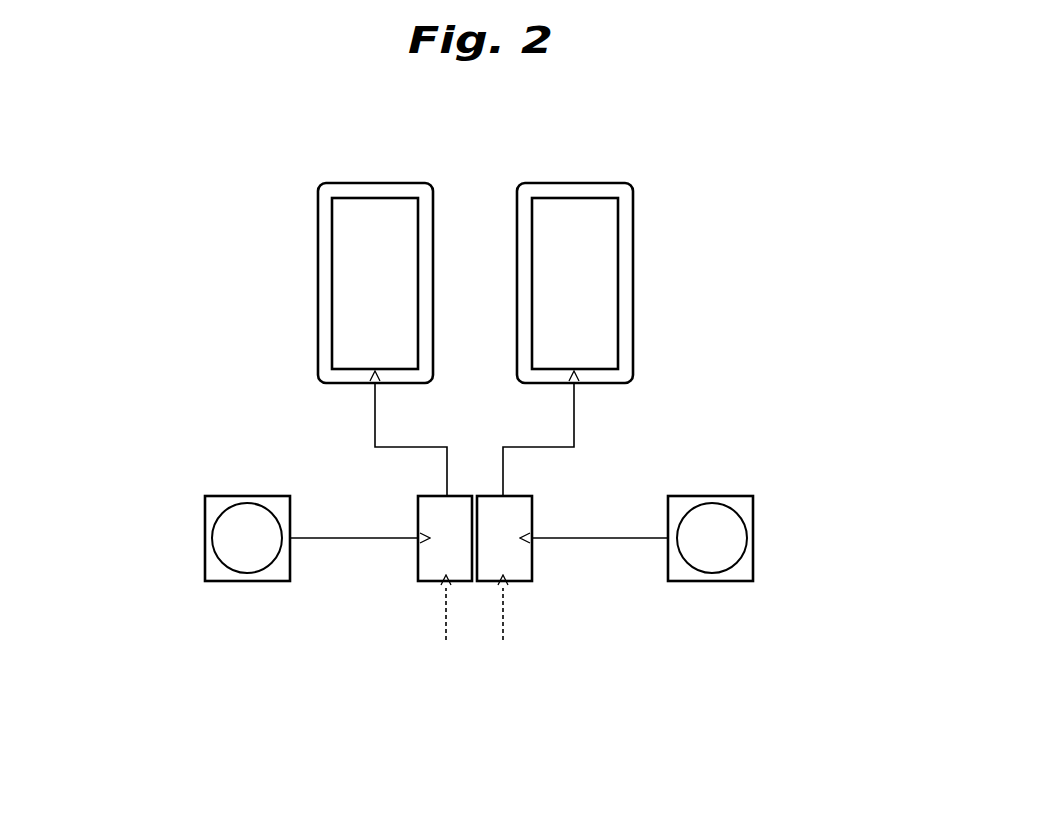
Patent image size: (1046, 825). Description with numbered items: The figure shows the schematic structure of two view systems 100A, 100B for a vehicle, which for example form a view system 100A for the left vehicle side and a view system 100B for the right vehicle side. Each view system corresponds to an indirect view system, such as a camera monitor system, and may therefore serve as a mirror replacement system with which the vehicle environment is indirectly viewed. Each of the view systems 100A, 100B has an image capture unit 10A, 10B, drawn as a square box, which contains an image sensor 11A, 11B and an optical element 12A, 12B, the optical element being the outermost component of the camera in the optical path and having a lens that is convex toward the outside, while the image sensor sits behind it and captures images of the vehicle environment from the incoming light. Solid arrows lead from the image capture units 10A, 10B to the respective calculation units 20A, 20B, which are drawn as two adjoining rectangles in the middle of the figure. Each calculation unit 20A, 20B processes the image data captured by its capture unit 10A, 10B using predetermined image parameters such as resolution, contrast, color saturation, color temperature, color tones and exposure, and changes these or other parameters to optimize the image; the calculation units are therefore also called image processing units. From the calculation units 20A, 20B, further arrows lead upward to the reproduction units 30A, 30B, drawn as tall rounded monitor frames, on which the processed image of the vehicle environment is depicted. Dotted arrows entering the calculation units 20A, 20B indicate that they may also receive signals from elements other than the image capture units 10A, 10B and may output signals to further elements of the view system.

The view system 100A is at (180, 357).
The view system 100B is at (747, 357).
The image capture unit 10A is at (178, 630).
The image capture unit 10B is at (817, 607).
The image sensor 11A is at (203, 562).
The image sensor 11B is at (755, 543).
The optical element 12A is at (236, 552).
The optical element 12B is at (713, 555).
The calculation unit 20A is at (423, 582).
The calculation unit 20B is at (532, 583).
The reproduction unit 30A is at (317, 290).
The reproduction unit 30B is at (633, 288).